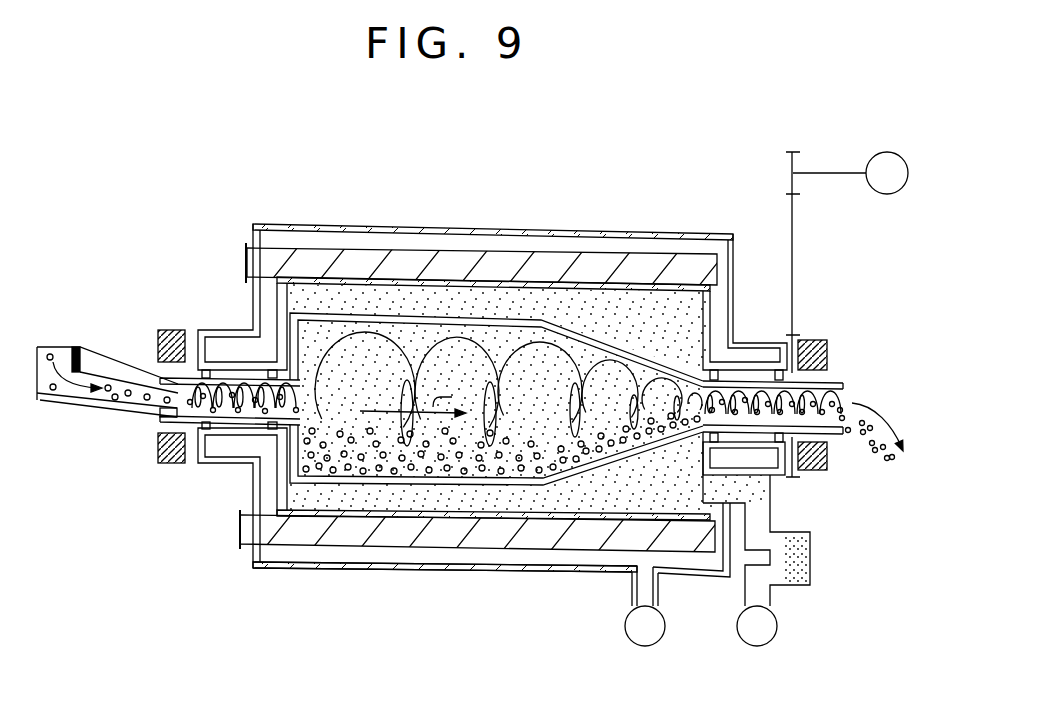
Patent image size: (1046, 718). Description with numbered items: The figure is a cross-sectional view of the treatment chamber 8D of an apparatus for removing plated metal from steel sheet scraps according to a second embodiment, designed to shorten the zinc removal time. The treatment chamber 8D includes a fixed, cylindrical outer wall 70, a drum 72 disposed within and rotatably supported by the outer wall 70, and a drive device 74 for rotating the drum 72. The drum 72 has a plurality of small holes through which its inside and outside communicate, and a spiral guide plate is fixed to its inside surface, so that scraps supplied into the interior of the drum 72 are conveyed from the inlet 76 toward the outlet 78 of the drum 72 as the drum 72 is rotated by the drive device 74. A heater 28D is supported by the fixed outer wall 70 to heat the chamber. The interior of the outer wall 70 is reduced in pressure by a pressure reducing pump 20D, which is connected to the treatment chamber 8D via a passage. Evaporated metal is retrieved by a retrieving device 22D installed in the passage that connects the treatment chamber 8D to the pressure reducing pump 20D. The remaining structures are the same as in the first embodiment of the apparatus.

The outer wall 70 is at (317, 228).
The drum 72 is at (449, 305).
The drive device 74 is at (880, 152).
The inlet 76 is at (290, 400).
The outlet 78 is at (687, 395).
The treatment chamber 8D is at (527, 498).
The heater 28D is at (330, 533).
The pressure reducing pump 20D is at (750, 650).
The retrieving device 22D is at (793, 588).